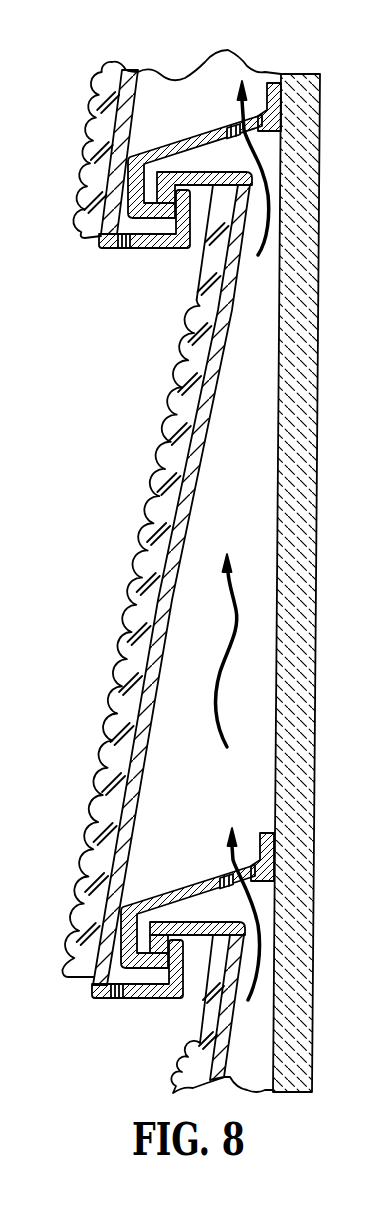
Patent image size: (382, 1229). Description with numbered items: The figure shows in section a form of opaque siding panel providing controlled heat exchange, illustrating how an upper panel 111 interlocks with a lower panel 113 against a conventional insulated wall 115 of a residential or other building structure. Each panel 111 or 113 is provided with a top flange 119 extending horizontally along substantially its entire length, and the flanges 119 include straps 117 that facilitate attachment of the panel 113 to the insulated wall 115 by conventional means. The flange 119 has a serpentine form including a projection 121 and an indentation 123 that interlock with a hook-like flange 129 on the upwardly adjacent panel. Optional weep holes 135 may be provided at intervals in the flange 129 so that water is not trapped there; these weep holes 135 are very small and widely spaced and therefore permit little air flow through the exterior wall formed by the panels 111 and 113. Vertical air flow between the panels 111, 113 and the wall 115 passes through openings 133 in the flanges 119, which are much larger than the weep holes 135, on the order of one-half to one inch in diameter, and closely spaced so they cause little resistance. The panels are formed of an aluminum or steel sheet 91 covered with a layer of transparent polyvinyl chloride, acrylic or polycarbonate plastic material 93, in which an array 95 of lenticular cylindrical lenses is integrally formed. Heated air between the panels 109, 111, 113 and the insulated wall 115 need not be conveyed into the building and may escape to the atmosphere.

The aluminum or steel sheet 91 is at (206, 467).
The transparent plastic material layer 93 is at (158, 463).
The array of lenses 95 is at (148, 541).
The panel 109 is at (79, 138).
The upper siding panel 111 is at (126, 622).
The lower siding panel 113 is at (181, 1068).
The insulated wall 115 is at (281, 392).
The strap 117 is at (260, 77).
The top flange 119 is at (200, 134).
The projection 121 is at (163, 985).
The indentation 123 is at (208, 906).
The hook-like flange 129 is at (192, 230).
The opening 133 is at (236, 124).
The weep hole 135 is at (123, 248).